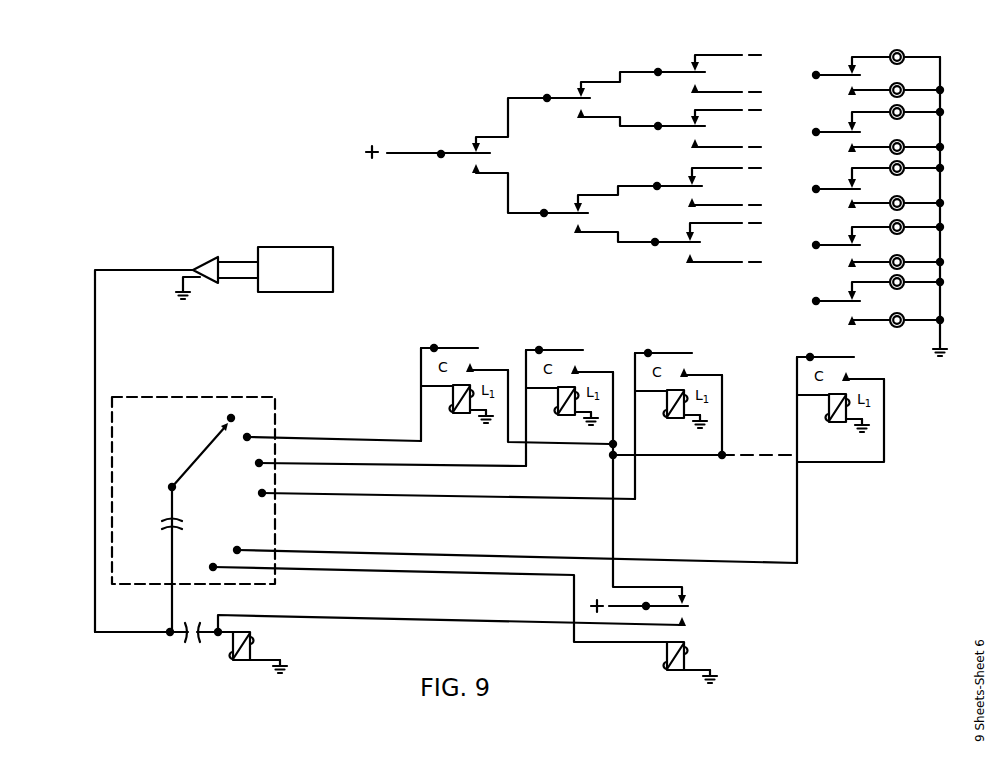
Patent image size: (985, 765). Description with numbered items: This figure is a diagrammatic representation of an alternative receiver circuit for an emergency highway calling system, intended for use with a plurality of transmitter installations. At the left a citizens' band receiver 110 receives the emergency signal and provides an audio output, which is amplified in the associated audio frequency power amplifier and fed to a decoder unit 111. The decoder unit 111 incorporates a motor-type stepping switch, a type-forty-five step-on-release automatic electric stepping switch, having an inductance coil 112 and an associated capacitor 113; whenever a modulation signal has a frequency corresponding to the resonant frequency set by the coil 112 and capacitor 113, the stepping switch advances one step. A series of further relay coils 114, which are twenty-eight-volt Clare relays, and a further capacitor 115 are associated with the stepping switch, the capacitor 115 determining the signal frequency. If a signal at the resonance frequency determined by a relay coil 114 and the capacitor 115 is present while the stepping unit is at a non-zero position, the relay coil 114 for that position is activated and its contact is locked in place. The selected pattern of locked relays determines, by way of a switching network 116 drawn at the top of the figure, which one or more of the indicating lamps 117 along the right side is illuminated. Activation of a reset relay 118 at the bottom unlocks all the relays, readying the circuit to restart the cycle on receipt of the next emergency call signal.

The citizens' band receiver 110 is at (280, 246).
The decoder unit 111 is at (275, 413).
The inductance coil 112 is at (236, 663).
The capacitor 113 is at (193, 623).
The relay coils 114 is at (455, 412).
The capacitor 115 is at (158, 522).
The switching network 116 is at (562, 170).
The indicating lamps 117 is at (905, 60).
The reset relay 118 is at (667, 647).